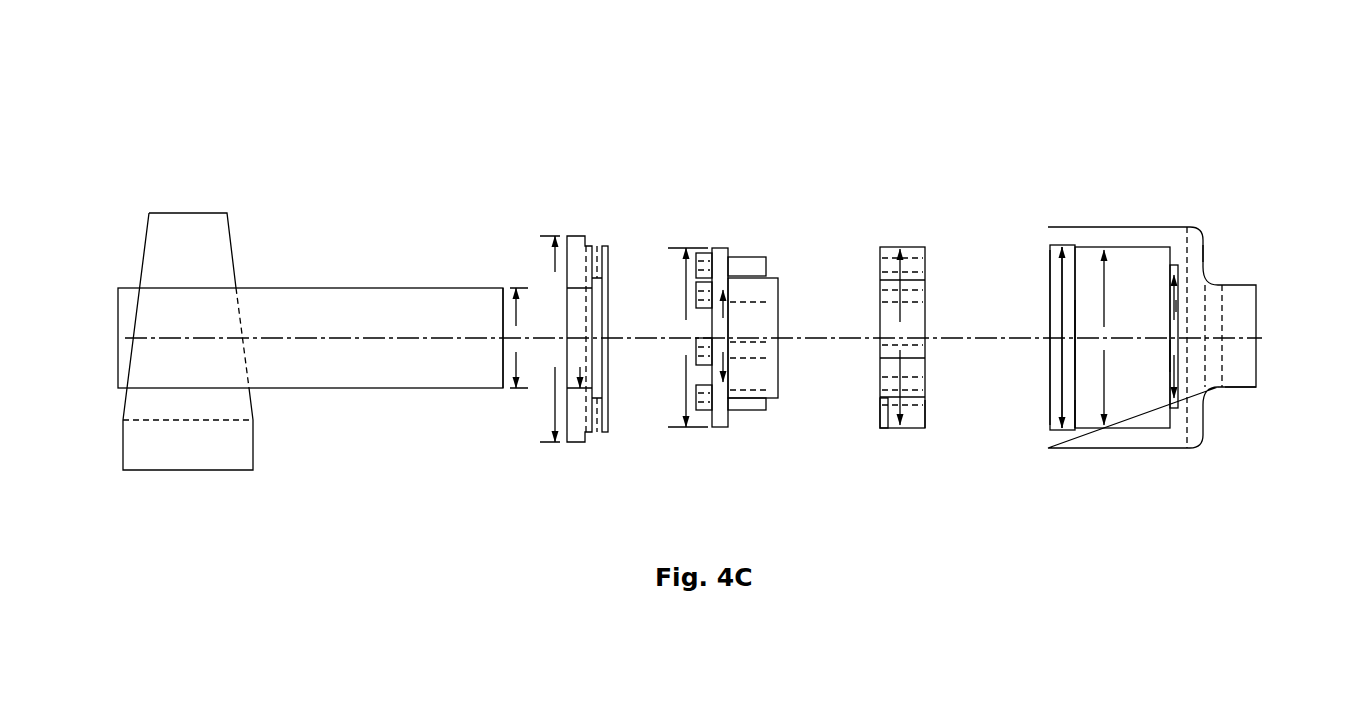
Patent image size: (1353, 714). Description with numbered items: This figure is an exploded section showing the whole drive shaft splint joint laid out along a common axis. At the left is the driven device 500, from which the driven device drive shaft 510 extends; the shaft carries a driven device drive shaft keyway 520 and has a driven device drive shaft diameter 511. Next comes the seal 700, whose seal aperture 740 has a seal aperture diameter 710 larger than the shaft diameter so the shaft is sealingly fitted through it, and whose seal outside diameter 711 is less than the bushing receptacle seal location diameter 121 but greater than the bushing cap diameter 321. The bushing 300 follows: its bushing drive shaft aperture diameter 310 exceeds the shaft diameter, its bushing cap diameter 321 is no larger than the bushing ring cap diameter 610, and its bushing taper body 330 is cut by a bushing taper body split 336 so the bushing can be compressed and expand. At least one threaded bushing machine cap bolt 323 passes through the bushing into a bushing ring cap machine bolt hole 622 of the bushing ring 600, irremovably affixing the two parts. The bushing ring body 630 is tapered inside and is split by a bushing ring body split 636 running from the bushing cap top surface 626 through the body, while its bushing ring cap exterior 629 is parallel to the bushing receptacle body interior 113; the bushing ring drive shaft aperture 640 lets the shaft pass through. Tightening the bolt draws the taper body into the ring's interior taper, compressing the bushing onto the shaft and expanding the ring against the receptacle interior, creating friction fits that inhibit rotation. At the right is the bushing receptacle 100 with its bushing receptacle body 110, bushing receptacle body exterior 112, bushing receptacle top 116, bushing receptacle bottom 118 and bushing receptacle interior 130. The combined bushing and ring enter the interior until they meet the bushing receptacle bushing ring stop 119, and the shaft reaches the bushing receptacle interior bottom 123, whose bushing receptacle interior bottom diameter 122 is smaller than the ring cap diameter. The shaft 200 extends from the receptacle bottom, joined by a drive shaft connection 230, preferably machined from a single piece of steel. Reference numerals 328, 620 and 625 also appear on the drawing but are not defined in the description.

The bushing receptacle 100 is at (1079, 153).
The bushing receptacle body 110 is at (1104, 302).
The bushing receptacle body exterior 112 is at (1106, 235).
The bushing receptacle body interior 113 is at (1088, 390).
The bushing receptacle top 116 is at (1066, 227).
The bushing receptacle bottom 118 is at (1203, 252).
The bushing receptacle bushing ring stop 119 is at (1170, 372).
The bushing receptacle seal location diameter 121 is at (1063, 305).
The bushing receptacle interior bottom diameter 122 is at (1176, 307).
The bushing receptacle interior bottom 123 is at (1177, 383).
The bushing receptacle interior 130 is at (1088, 362).
The shaft 200 is at (1238, 388).
The drive shaft connection 230 is at (1218, 283).
The bushing 300 is at (727, 178).
The bushing drive shaft aperture diameter 310 is at (725, 318).
The bushing cap diameter 321 is at (684, 275).
The threaded bushing machine cap bolt 323 is at (700, 256).
The lower boss 328 is at (730, 410).
The bushing taper body 330 is at (765, 398).
The bushing taper body split 336 is at (745, 358).
The driven device 500 is at (183, 193).
The driven device drive shaft 510 is at (335, 305).
The driven device drive shaft diameter 511 is at (518, 313).
The driven device drive shaft keyway 520 is at (483, 312).
The bushing ring 600 is at (893, 168).
The bushing ring cap diameter 610 is at (900, 285).
The disc upper hole 620 is at (882, 282).
The bushing ring cap machine bolt hole 622 is at (888, 265).
The disc lower edge 625 is at (925, 413).
The bushing cap top surface 626 is at (884, 400).
The bushing ring cap exterior 629 is at (912, 432).
The bushing ring body 630 is at (887, 315).
The bushing ring body split 636 is at (907, 357).
The bushing ring drive shaft aperture 640 is at (889, 377).
The seal 700 is at (587, 413).
The seal aperture diameter 710 is at (580, 318).
The seal outside diameter 711 is at (566, 378).
The seal aperture 740 is at (558, 420).